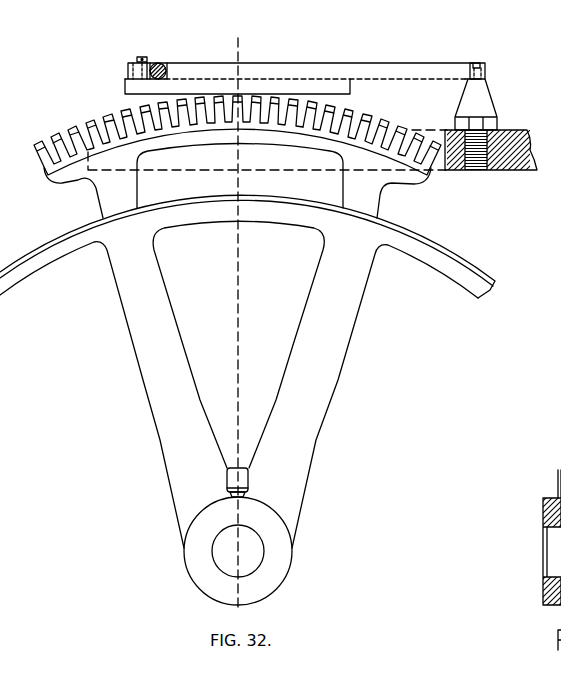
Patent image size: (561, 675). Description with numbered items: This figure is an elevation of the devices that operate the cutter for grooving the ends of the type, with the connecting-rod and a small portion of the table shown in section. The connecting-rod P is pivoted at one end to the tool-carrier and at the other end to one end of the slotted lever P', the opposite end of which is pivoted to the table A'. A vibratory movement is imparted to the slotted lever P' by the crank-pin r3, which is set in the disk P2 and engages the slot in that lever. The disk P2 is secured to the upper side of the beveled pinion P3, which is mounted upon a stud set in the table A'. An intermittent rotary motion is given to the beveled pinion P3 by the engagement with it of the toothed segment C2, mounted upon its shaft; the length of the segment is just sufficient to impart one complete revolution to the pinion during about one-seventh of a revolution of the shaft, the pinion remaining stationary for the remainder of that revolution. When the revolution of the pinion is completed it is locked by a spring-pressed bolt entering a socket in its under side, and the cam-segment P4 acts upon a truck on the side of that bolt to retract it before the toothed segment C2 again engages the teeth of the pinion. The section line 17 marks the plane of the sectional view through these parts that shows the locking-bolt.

The section line 17 17 is at (238, 326).
The slotted lever P' is at (302, 61).
The disk P2 is at (338, 87).
The crank-pin r3 is at (143, 57).
The connecting-rod P is at (167, 61).
The table A' is at (476, 116).
The toothed segment C2 is at (240, 137).
The beveled pinion P3 is at (277, 118).
The cam-segment P4 is at (198, 211).